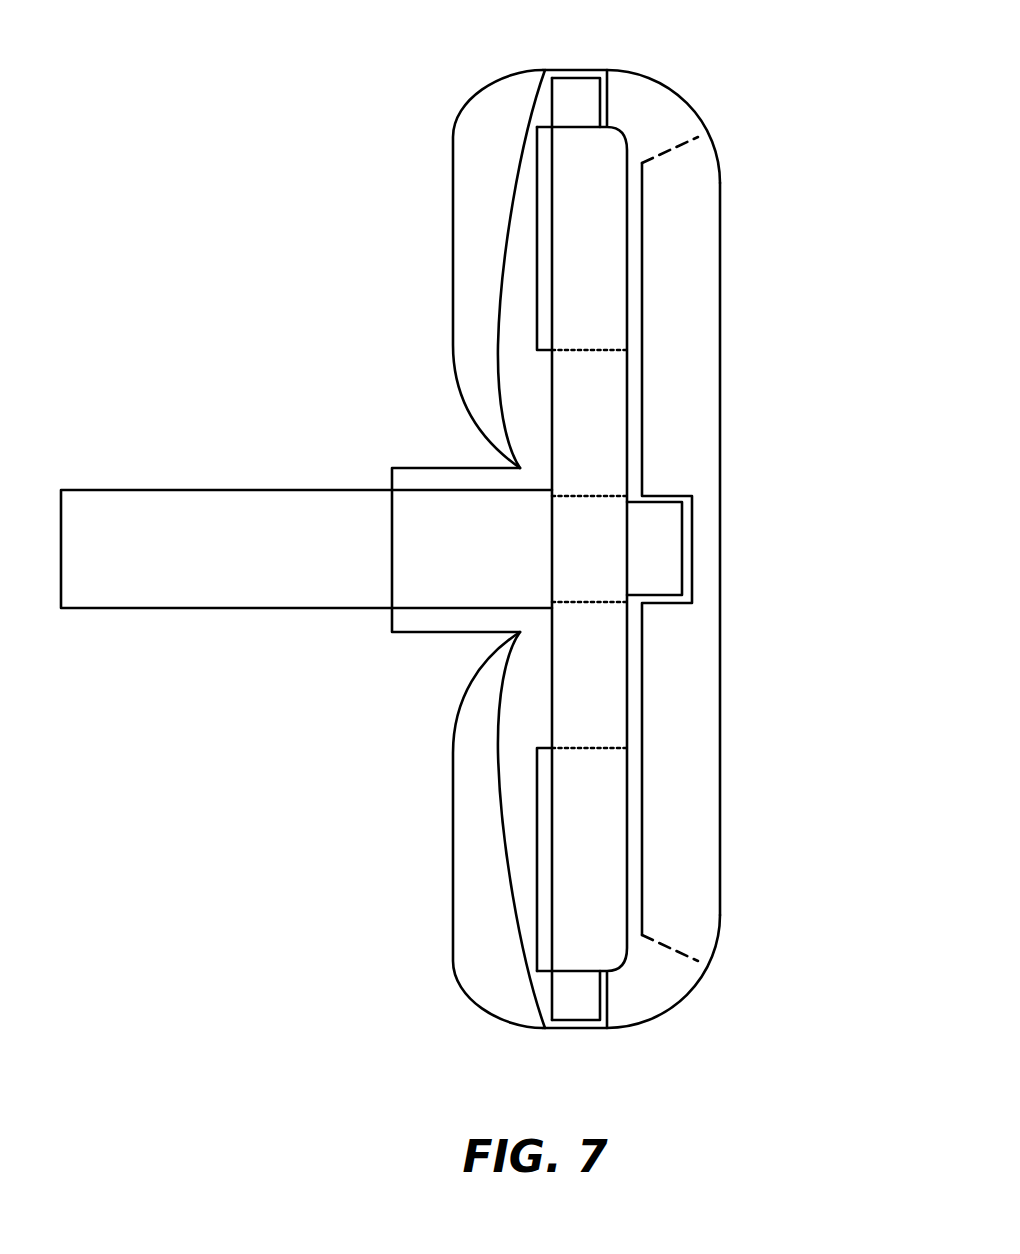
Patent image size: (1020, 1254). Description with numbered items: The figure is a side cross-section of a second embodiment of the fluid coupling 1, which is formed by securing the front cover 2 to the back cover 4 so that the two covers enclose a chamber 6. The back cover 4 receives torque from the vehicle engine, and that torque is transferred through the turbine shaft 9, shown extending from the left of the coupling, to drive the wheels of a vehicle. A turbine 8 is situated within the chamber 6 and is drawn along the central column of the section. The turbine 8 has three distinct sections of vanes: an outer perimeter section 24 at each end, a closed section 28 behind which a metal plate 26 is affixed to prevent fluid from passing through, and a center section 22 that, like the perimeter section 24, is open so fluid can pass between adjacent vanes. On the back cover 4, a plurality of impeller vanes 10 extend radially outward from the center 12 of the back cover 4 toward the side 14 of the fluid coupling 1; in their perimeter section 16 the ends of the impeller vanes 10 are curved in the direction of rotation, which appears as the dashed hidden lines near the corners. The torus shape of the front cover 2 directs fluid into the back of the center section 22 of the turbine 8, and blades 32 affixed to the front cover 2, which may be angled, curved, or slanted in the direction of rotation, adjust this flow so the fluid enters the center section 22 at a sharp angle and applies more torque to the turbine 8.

The fluid coupling 1 is at (280, 112).
The front cover 2 is at (452, 235).
The back cover 4 is at (721, 227).
The chamber 6 is at (537, 416).
The turbine 8 is at (552, 670).
The turbine shaft 9 is at (150, 530).
The impeller vanes 10 is at (668, 369).
The center 12 is at (692, 496).
The side 14 is at (628, 71).
The perimeter section 16 is at (657, 123).
The center section 22 is at (573, 432).
The perimeter section 24 is at (573, 105).
The metal plate 26 is at (535, 298).
The closed section 28 is at (573, 257).
The blades 32 is at (478, 153).